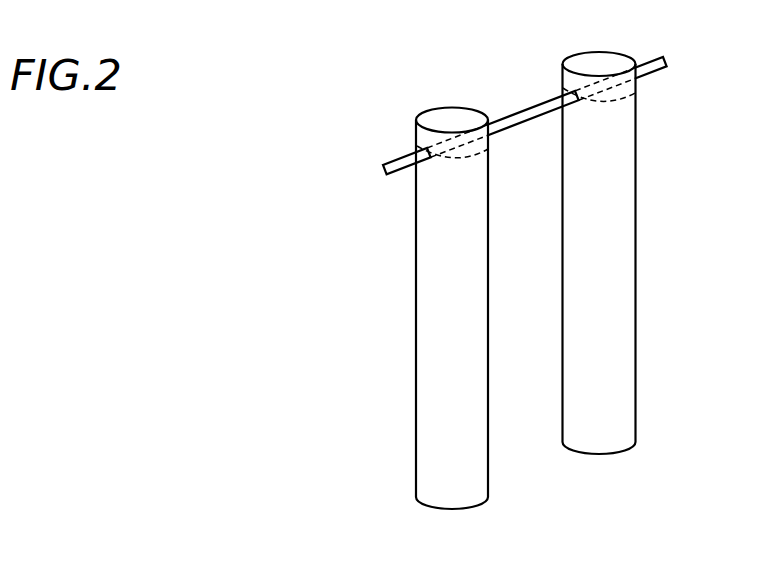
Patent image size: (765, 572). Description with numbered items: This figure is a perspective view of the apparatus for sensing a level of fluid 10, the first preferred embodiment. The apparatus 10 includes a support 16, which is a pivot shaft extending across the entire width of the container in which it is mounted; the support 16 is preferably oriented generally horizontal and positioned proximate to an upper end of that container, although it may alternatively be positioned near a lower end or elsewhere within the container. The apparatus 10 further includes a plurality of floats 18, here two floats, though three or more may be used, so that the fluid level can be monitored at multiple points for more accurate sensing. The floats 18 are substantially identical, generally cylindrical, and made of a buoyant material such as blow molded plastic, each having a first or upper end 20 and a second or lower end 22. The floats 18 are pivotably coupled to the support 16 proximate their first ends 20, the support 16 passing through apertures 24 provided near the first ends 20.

The apparatus for sensing a level of fluid 10 is at (165, 252).
The support 16 is at (511, 110).
The floats 18 is at (395, 296).
The first end 20 is at (441, 116).
The second end 22 is at (453, 497).
The apertures 24 is at (490, 157).